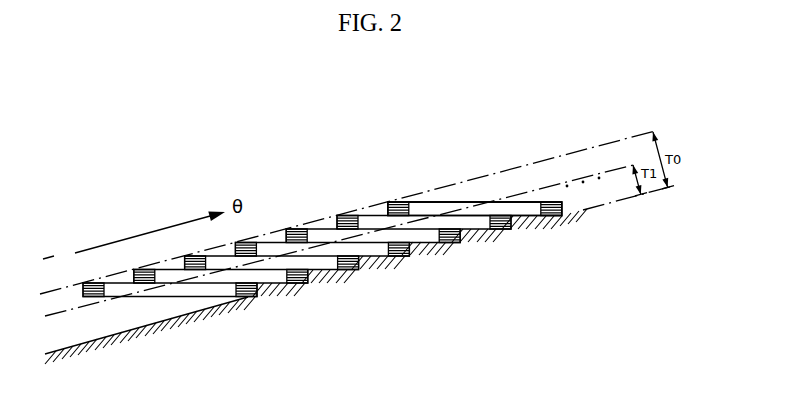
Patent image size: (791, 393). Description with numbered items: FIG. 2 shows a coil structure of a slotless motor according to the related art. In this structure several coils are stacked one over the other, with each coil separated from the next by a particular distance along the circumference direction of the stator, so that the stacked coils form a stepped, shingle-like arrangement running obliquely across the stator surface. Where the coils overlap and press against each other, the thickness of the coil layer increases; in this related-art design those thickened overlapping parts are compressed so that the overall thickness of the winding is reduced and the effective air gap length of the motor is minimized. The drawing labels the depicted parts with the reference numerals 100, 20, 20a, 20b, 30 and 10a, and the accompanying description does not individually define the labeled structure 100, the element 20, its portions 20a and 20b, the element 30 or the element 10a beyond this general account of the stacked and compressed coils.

The electrode assembly 100 is at (325, 218).
The electrode plate 20 is at (399, 229).
The first end portion of electrode plate 20a is at (349, 242).
The second end portion of electrode plate 20b is at (402, 256).
The separator 30 is at (500, 203).
The electrode surface 10a is at (532, 202).